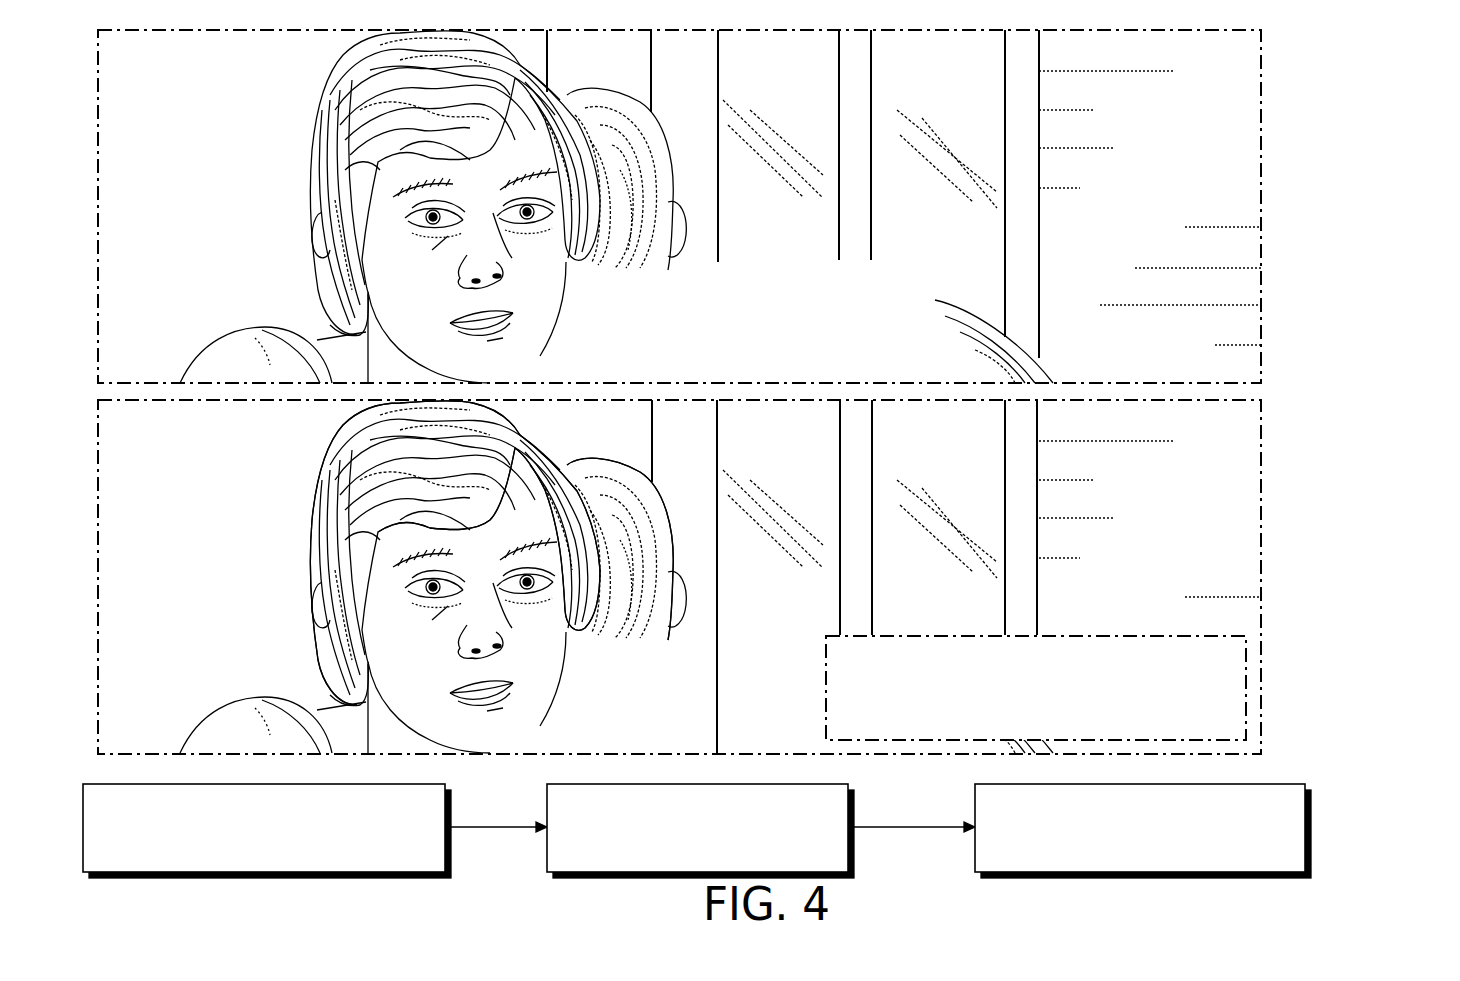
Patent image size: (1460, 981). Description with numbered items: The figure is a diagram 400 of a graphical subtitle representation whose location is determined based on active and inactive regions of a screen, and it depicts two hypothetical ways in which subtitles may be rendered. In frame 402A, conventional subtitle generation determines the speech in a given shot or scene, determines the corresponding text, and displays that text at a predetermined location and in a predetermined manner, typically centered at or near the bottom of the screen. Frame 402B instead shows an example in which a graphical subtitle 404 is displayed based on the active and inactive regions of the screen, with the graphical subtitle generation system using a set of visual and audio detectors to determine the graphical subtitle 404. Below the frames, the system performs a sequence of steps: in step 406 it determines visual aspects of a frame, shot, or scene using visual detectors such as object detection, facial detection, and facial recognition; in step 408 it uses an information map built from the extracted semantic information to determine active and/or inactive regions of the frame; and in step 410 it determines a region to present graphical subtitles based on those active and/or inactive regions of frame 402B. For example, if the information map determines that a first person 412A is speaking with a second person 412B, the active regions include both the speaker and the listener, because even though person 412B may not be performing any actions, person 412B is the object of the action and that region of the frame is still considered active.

The diagram 400 is at (1318, 82).
The frame 402A is at (1261, 172).
The frame 402B is at (1261, 495).
The graphical subtitle 404 is at (1245, 692).
The step 406 is at (416, 852).
The step 408 is at (762, 852).
The step 410 is at (1253, 852).
The first person 412A is at (307, 547).
The second person 412B is at (675, 548).